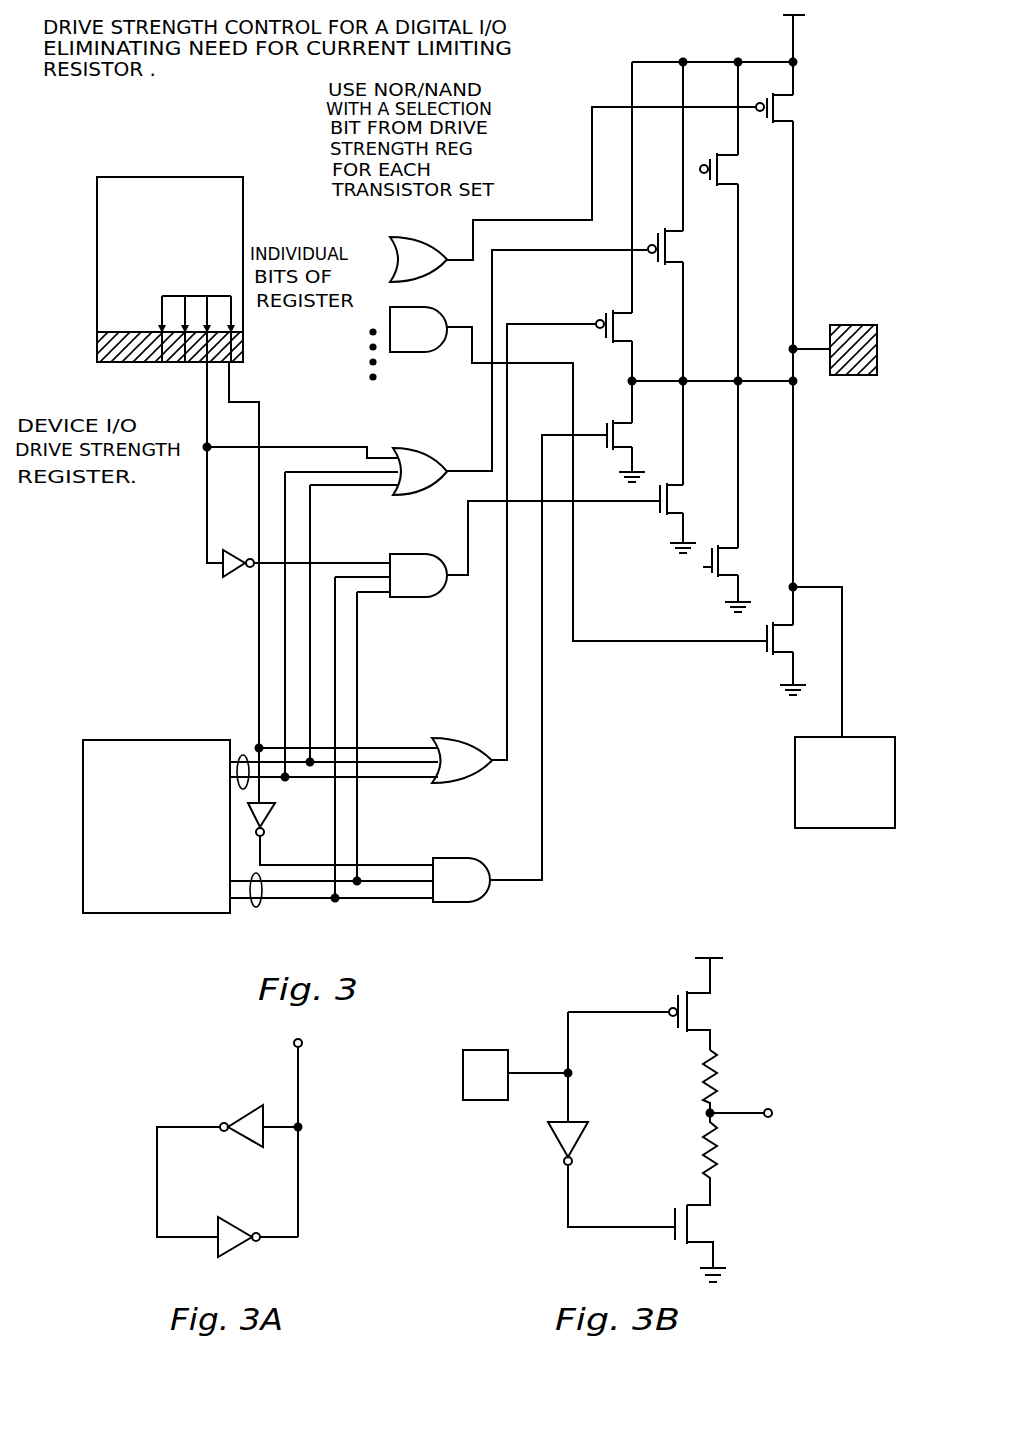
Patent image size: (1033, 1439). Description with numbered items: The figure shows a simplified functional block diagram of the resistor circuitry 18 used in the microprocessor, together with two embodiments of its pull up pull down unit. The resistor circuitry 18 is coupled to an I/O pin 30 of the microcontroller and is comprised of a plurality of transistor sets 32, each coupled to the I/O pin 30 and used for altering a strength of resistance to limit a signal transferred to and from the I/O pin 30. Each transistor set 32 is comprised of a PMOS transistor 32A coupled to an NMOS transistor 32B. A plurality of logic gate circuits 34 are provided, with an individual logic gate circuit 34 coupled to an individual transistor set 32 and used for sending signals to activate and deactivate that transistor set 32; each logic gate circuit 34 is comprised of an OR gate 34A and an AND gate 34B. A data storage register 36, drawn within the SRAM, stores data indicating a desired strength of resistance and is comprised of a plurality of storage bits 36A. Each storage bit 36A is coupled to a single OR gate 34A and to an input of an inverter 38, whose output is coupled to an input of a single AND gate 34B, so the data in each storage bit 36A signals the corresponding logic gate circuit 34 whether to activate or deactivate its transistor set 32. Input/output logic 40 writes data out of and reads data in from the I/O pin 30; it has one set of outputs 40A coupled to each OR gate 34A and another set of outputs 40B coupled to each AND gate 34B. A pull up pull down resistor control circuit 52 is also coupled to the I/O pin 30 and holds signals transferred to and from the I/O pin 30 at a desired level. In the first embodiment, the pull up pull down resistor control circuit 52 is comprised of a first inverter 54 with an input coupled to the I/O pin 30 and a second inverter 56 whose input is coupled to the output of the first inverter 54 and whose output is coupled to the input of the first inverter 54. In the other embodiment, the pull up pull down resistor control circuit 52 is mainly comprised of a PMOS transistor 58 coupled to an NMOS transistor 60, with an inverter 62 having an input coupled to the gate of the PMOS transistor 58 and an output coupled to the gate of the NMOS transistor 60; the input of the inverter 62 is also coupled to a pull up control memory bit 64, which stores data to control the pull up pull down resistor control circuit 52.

In FIG. 3, the resistor circuitry 18 is at (840, 63).
In FIG. 3, the I/O pin 30 is at (861, 324).
In FIG. 3, the transistor set 32 is at (784, 59).
In FIG. 3, the PMOS transistor 32A is at (785, 102).
In FIG. 3, the NMOS transistor 32B is at (625, 437).
In FIG. 3, the logic gate circuit 34 is at (377, 310).
In FIG. 3, the OR gate 34A is at (430, 237).
In FIG. 3, the AND gate 34B is at (410, 355).
In FIG. 3, the data storage register 36 is at (166, 176).
In FIG. 3, the storage bit 36A is at (220, 362).
In FIG. 3, the inverter 38 is at (222, 578).
In FIG. 3, the I/O logic 40 is at (123, 740).
In FIG. 3, the set of outputs 40A is at (243, 755).
In FIG. 3, the set of outputs 40B is at (258, 908).
In FIG. 3, the pull up pull down resistor control circuit 52 is at (795, 790).
In FIG. 3A, the pull up pull down resistor control circuit 52 is at (168, 1102).
In FIG. 3B, the pull up pull down resistor control circuit 52 is at (752, 1010).
In FIG. 3A, the first inverter 54 is at (242, 1107).
In FIG. 3A, the second inverter 56 is at (217, 1223).
In FIG. 3B, the PMOS transistor 58 is at (672, 1004).
In FIG. 3B, the NMOS transistor 60 is at (675, 1240).
In FIG. 3B, the inverter 62 is at (560, 1143).
In FIG. 3B, the pull up control memory bit 64 is at (490, 1050).